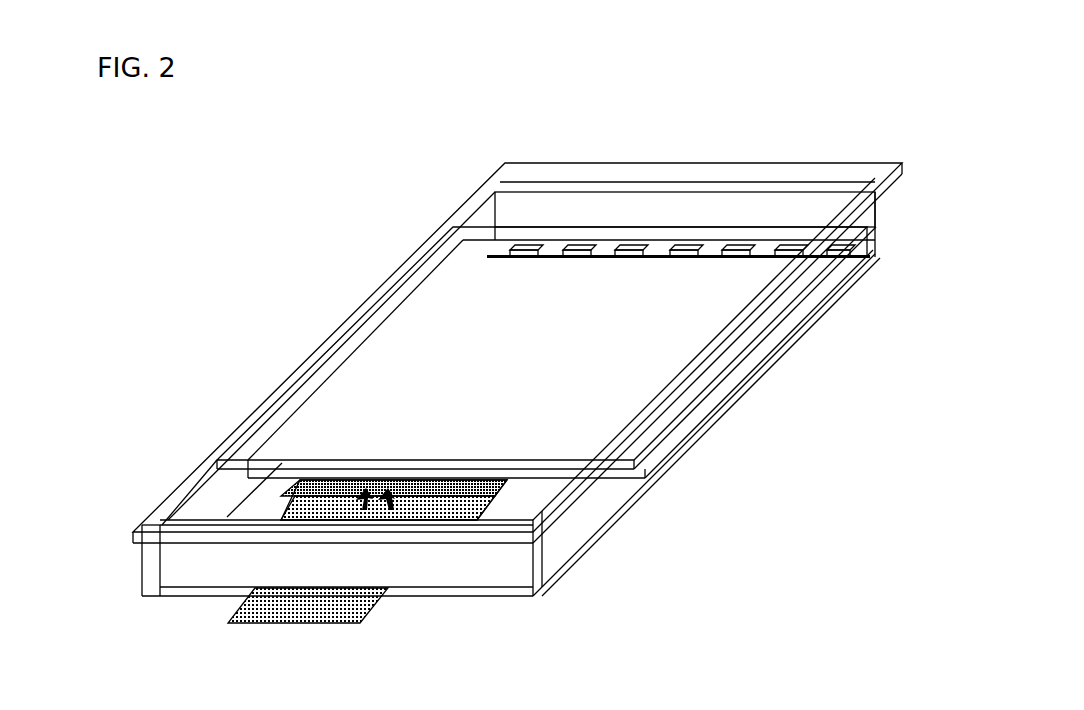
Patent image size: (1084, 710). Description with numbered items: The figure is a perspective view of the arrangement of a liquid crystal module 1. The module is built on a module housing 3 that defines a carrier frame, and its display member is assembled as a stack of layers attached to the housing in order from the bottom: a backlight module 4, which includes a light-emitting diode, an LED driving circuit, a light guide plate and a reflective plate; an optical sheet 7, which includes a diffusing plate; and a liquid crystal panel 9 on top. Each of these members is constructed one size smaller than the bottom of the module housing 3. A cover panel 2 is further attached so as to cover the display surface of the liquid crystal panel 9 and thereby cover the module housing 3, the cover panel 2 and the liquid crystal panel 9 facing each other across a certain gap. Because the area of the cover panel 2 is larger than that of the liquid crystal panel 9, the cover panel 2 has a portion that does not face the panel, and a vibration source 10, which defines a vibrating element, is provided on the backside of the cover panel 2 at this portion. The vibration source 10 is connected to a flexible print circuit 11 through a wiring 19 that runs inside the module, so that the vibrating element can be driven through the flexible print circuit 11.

The liquid crystal module 1 is at (492, 133).
The cover panel 2 is at (538, 172).
The module housing 3 is at (136, 562).
The backlight module 4 is at (712, 245).
The optical sheet 7 is at (285, 473).
The liquid crystal panel 9 is at (430, 343).
The vibration source 10 is at (470, 502).
The flexible print circuit 11 is at (336, 612).
The wiring 19 is at (363, 508).